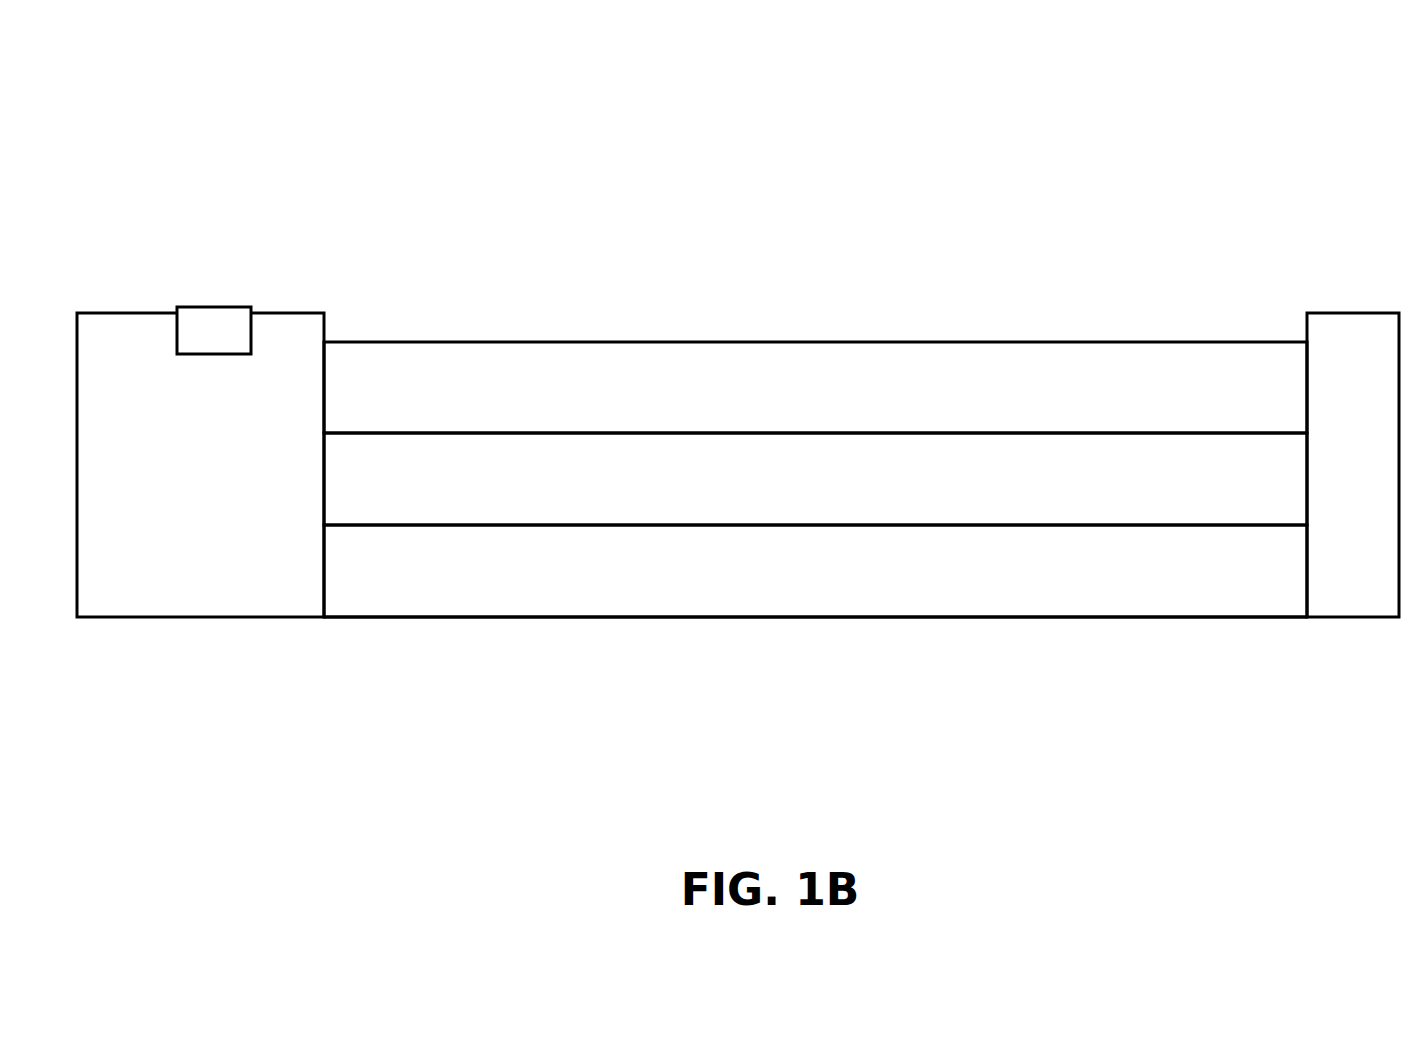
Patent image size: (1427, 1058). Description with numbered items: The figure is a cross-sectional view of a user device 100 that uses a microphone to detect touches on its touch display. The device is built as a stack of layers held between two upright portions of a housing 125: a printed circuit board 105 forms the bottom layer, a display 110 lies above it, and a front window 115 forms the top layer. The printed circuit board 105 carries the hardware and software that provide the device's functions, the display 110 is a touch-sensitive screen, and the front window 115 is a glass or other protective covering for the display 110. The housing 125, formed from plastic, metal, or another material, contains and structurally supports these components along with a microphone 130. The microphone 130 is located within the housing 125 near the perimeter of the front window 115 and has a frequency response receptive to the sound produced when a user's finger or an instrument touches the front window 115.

The user device 100 is at (276, 68).
The printed circuit board 105 is at (1089, 583).
The display 110 is at (687, 491).
The front window 115 is at (865, 370).
The housing 125 is at (223, 545).
The microphone 130 is at (214, 262).